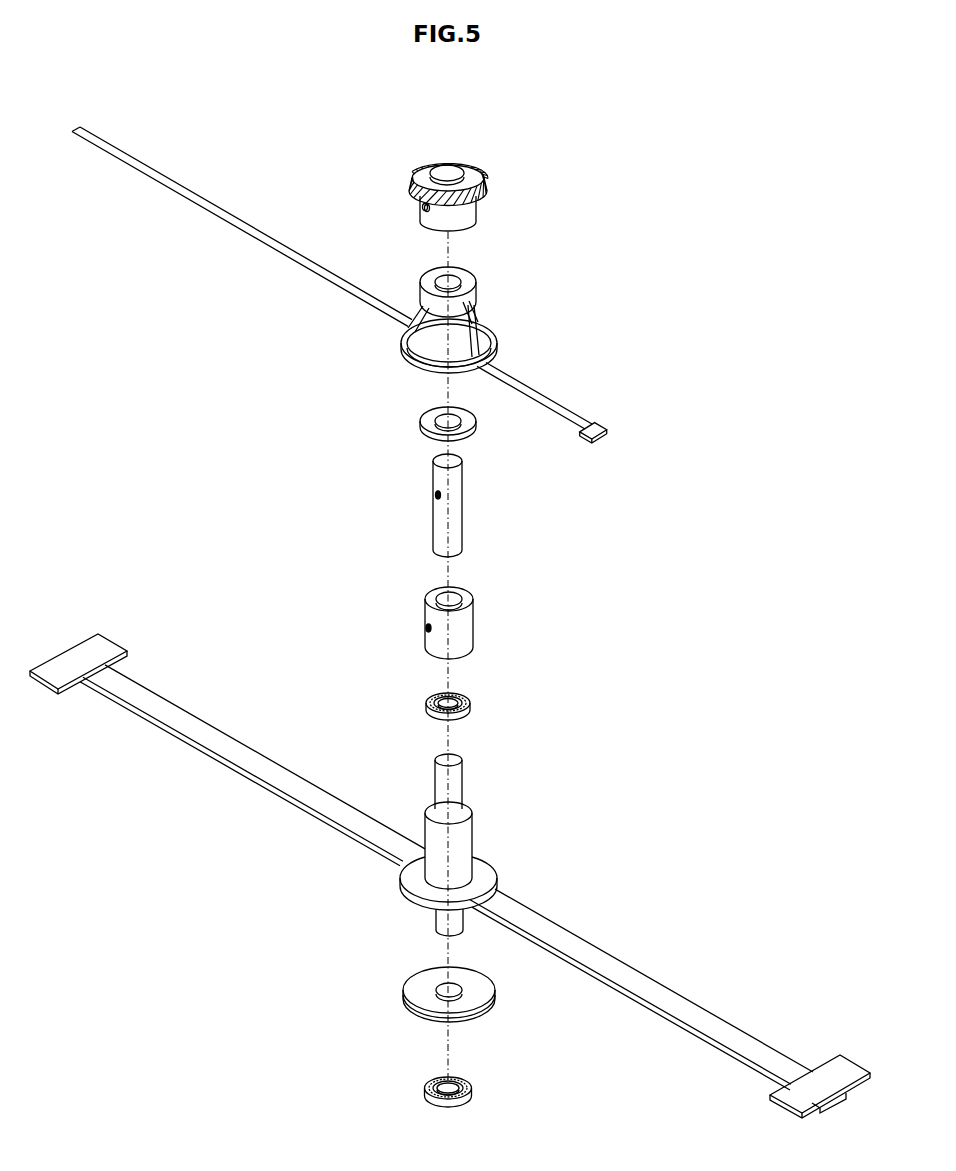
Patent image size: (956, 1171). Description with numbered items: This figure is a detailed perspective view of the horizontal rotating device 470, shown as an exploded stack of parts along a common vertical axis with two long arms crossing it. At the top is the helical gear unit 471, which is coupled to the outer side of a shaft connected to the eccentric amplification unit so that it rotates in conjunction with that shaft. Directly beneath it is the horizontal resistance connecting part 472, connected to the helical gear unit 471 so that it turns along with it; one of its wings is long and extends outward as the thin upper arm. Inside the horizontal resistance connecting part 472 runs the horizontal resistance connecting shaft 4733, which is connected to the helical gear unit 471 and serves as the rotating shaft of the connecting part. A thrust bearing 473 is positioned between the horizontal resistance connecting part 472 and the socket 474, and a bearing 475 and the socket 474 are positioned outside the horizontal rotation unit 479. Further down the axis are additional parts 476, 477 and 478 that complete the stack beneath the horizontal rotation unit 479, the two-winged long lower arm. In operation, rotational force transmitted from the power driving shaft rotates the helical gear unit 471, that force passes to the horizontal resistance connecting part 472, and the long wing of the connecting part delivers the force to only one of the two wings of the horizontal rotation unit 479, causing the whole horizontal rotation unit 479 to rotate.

The horizontal rotating device 470 is at (491, 138).
The helical gear unit 471 is at (414, 168).
The horizontal resistance connecting part 472 is at (479, 279).
The thrust bearing 473 is at (478, 428).
The horizontal resistance connecting shaft 4733 is at (463, 502).
The socket 474 is at (474, 619).
The bearing 475 is at (471, 700).
The flanged shaft 476 is at (474, 816).
The disc plate 477 is at (403, 992).
The lower bearing 478 is at (426, 1090).
The horizontal rotation unit 479 is at (700, 1000).